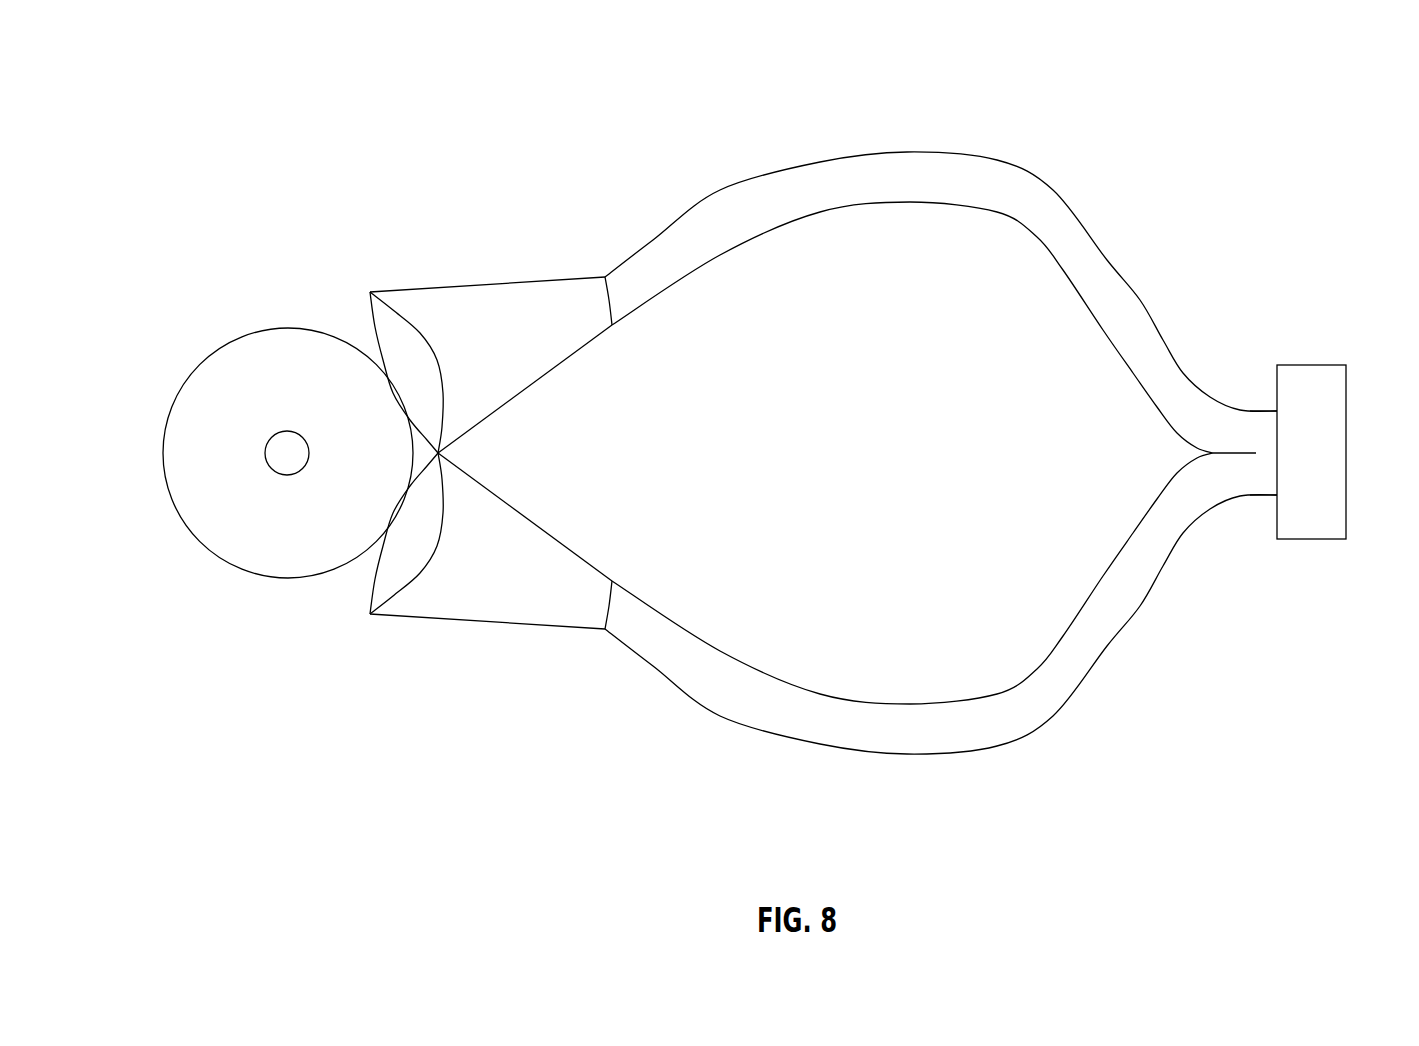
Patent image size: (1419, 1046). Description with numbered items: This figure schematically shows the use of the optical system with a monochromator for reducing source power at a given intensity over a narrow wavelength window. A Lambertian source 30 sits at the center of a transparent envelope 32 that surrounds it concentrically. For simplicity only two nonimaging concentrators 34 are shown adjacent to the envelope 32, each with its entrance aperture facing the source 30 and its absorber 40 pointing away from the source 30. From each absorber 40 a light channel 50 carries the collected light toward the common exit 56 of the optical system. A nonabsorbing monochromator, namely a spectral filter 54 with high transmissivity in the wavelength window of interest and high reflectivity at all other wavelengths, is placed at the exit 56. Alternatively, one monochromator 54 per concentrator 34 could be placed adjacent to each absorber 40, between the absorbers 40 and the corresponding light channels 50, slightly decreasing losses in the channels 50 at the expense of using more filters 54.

The source 30 is at (267, 467).
The transparent envelope 32 is at (222, 345).
The non-imaging concentrator 34 is at (475, 282).
The absorber 40 is at (603, 277).
The light channel 50 is at (1005, 158).
The spectral filter 54 is at (1330, 365).
The exit 56 is at (1266, 411).